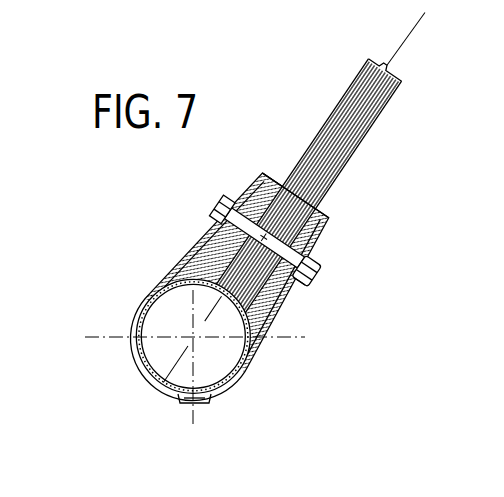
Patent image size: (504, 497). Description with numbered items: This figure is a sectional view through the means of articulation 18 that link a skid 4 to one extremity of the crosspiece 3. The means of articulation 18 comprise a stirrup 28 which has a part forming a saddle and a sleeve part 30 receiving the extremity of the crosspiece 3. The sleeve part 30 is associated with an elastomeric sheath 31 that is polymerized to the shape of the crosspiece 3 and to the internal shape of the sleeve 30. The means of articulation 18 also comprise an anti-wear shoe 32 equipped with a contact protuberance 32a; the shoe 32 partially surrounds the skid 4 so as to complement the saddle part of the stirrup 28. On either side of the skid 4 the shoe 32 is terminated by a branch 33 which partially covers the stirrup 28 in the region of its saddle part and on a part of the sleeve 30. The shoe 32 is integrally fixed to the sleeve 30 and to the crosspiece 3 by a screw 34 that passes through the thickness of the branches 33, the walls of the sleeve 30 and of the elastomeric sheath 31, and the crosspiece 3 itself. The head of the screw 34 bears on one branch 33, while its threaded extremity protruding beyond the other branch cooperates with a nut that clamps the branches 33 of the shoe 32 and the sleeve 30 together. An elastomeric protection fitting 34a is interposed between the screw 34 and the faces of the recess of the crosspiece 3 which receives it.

The crosspiece 3 is at (376, 99).
The skid 4 is at (132, 318).
The means of articulation 18 is at (176, 236).
The stirrup 28 is at (254, 318).
The sleeve part 30 is at (326, 231).
The elastomeric sheath 31 is at (268, 176).
The anti-wear shoe 32 is at (257, 362).
The contact protuberance 32a is at (200, 405).
The branch 33 is at (287, 280).
The screw 34 is at (226, 196).
The elastomeric protection fitting 34a is at (314, 241).